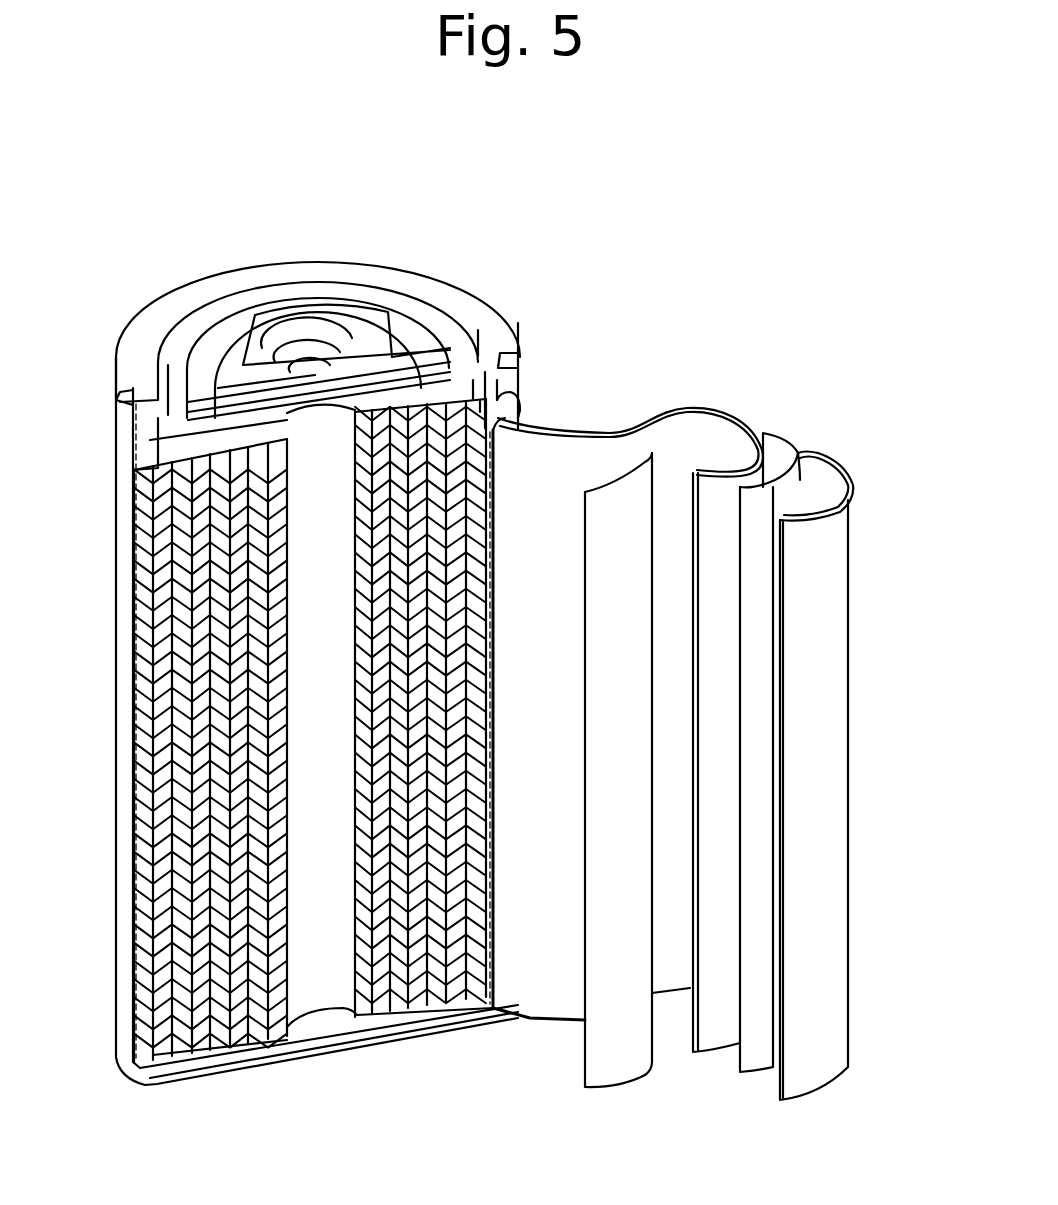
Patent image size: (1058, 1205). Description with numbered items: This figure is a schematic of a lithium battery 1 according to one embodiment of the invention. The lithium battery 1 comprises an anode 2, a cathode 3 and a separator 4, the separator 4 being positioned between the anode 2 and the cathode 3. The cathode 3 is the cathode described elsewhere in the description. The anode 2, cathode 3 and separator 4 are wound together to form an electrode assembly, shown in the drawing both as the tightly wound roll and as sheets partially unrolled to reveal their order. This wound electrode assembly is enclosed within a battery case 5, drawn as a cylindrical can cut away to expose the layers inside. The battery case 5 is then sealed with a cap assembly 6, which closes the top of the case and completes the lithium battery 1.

The lithium battery 1 is at (806, 380).
The anode 2 is at (833, 607).
The cathode 3 is at (714, 487).
The separator 4 is at (800, 486).
The battery case 5 is at (113, 988).
The cap assembly 6 is at (340, 303).